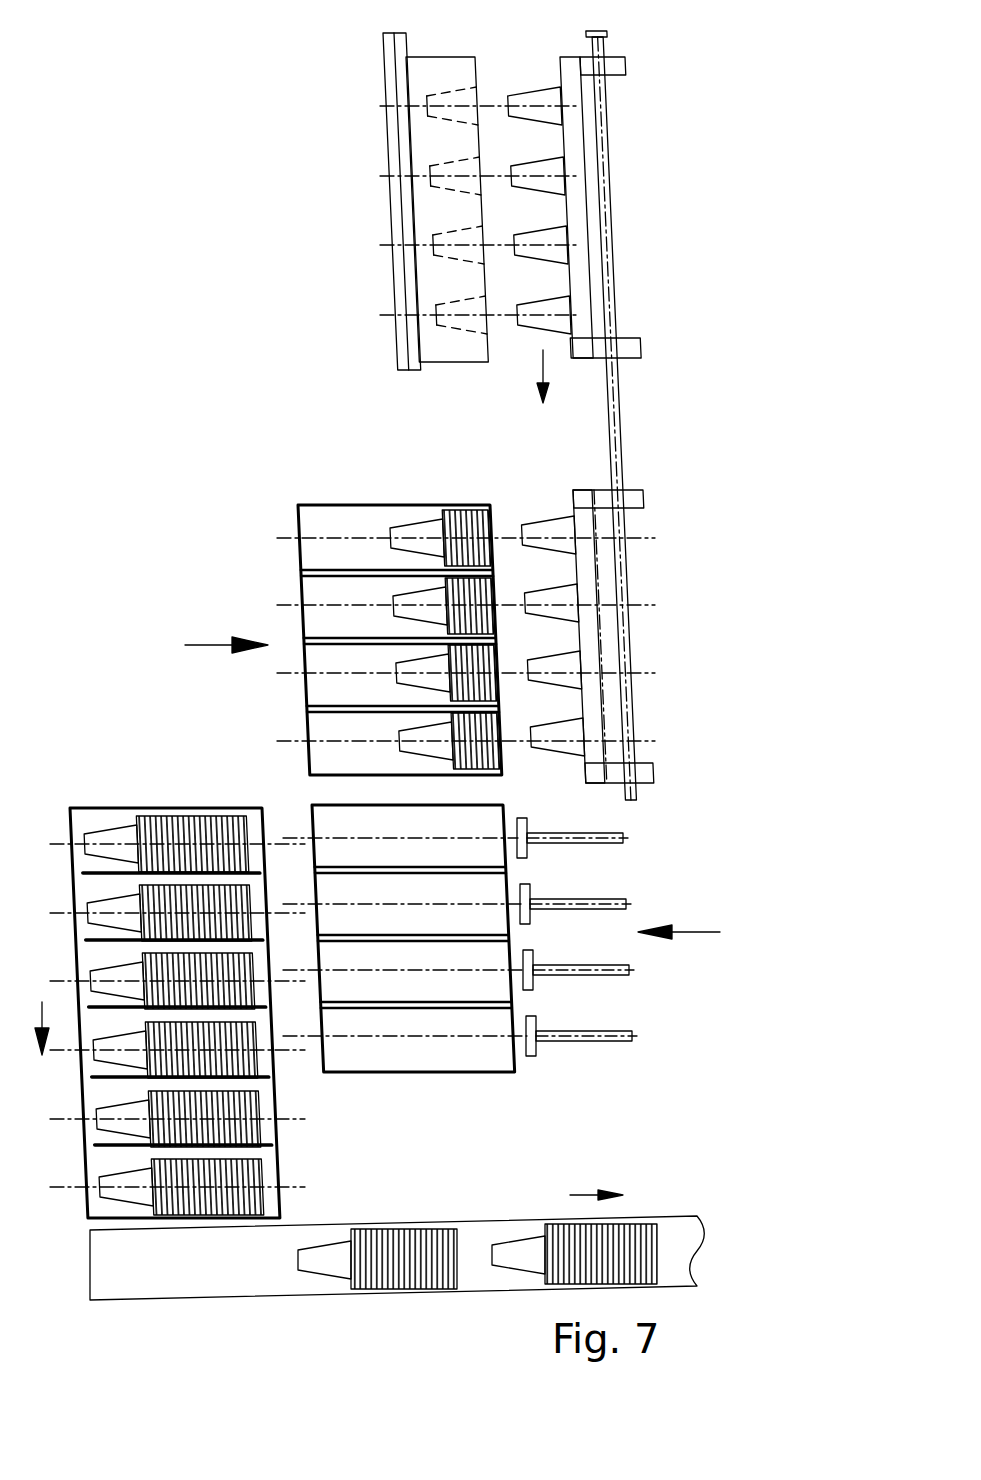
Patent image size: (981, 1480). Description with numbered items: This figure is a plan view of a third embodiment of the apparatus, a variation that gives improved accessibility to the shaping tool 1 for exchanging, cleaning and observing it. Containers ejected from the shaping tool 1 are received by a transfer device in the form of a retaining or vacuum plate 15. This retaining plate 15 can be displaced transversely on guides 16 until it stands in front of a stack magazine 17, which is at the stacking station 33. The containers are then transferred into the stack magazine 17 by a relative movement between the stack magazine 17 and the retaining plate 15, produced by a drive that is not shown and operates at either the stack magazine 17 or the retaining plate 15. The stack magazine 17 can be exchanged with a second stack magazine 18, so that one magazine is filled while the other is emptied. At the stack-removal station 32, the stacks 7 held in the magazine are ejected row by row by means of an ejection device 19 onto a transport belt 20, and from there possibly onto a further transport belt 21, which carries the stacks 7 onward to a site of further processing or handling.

The shaping tool 1 is at (442, 55).
The retaining or vacuum plate 15 is at (572, 136).
The guides 16 is at (622, 422).
The stack magazine 17 is at (333, 527).
The stack magazine 18 is at (418, 1055).
The ejection device 19 is at (590, 1043).
The transport belt 20 is at (268, 1161).
The further transport belt 21 is at (287, 1270).
The stacks 7 is at (650, 1222).
The stack-removal station 32 is at (680, 918).
The stacking station 33 is at (226, 632).